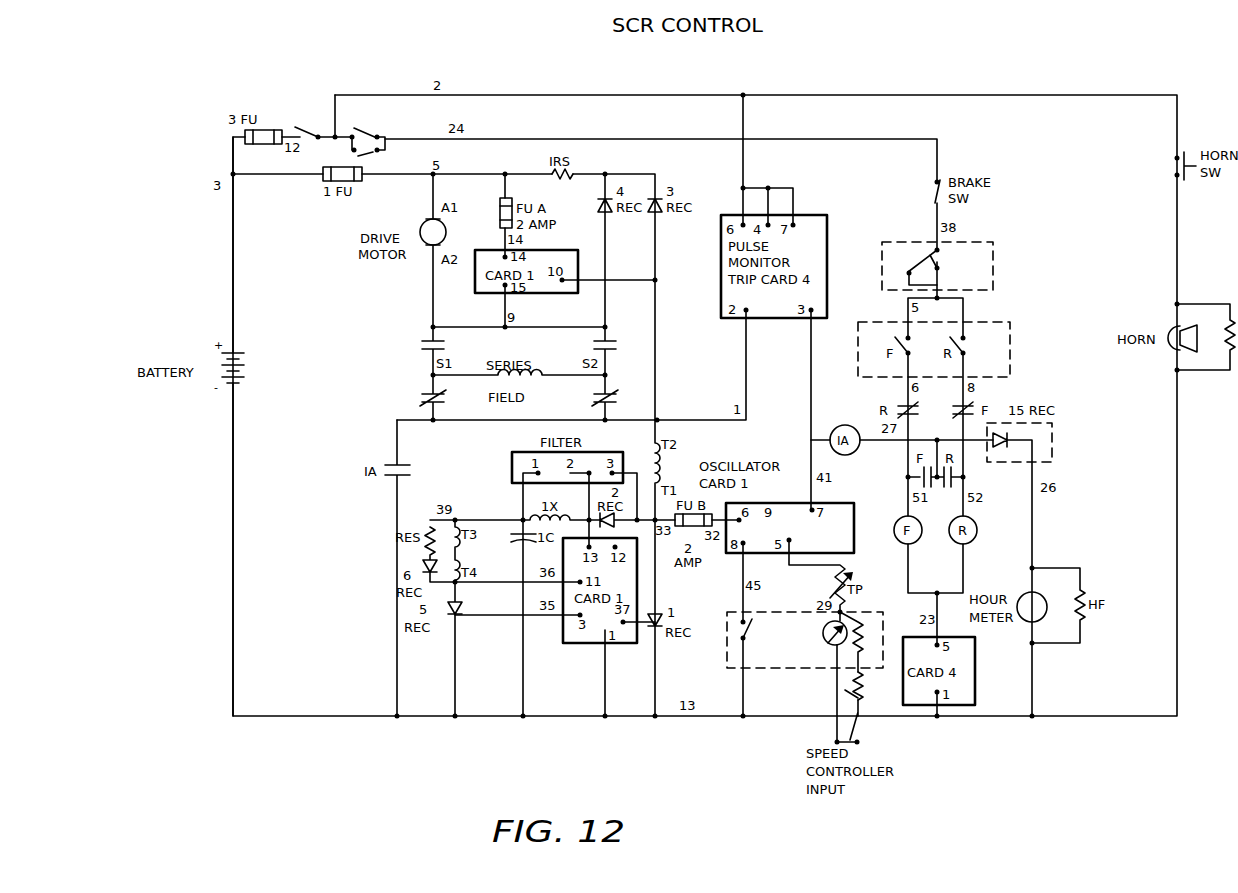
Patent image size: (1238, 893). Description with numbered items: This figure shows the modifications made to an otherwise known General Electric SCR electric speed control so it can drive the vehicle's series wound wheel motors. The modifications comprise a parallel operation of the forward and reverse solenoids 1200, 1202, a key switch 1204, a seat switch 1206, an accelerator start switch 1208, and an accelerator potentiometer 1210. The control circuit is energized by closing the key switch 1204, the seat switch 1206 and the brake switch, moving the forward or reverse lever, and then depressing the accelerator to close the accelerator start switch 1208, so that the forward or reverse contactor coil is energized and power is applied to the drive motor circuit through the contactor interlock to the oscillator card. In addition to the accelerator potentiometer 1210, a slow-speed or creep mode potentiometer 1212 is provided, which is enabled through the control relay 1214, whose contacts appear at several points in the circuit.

The forward solenoid 1200 is at (420, 400).
The reverse solenoid 1202 is at (620, 396).
The key switch 1204 is at (280, 119).
The seat switch 1206 is at (383, 92).
The accelerator start switch 1208 is at (979, 242).
The accelerator potentiometer 1210 is at (868, 612).
The creep mode potentiometer R2 1212 is at (870, 702).
The relay CSW 1214 is at (396, 145).